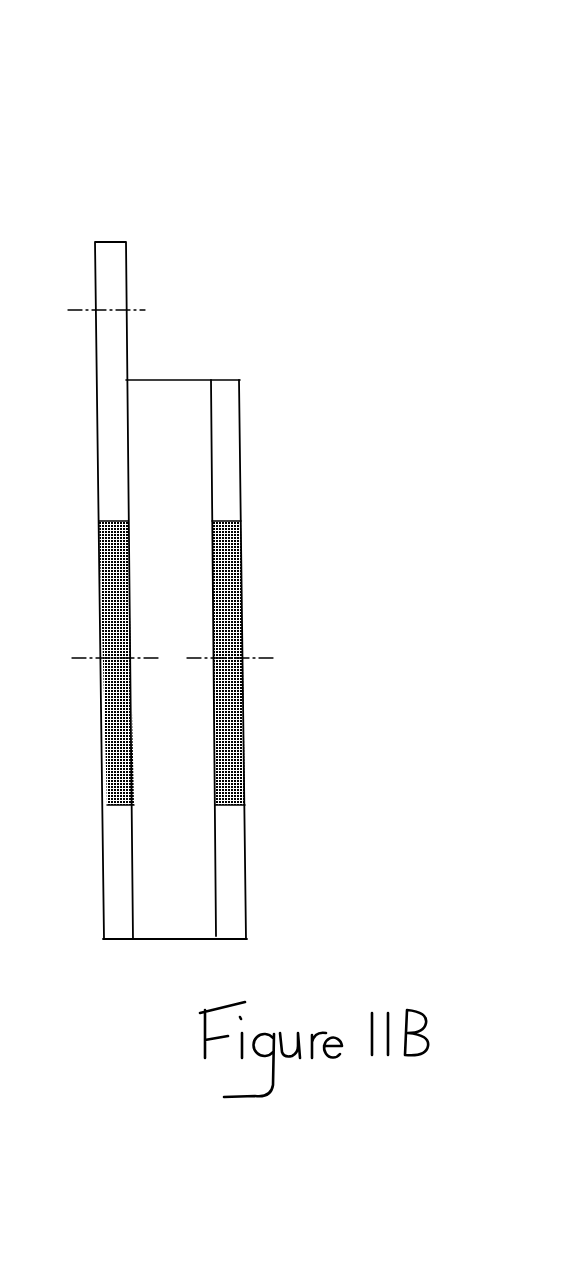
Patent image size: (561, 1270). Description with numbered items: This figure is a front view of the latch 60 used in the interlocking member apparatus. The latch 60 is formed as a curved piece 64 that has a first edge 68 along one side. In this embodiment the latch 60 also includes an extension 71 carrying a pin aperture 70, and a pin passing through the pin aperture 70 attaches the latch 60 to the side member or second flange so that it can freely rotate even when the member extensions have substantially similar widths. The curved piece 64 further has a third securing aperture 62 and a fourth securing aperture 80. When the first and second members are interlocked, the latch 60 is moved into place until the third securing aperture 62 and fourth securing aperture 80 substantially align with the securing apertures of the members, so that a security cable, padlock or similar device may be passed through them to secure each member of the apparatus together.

The latch 60 is at (261, 185).
The third securing aperture 62 is at (233, 688).
The curved piece 64 is at (238, 822).
The first edge 68 is at (113, 849).
The pin aperture 70 is at (166, 320).
The extension 71 is at (108, 327).
The fourth securing aperture 80 is at (110, 695).